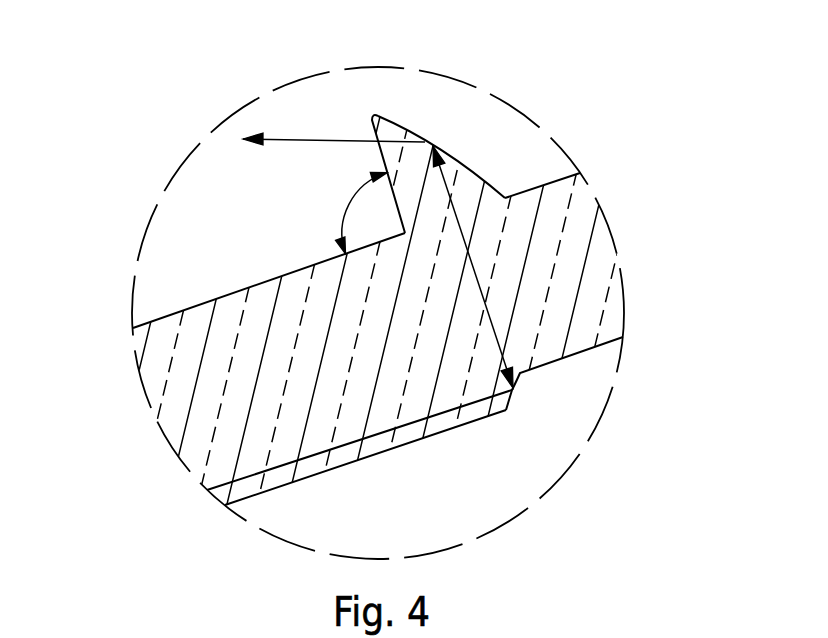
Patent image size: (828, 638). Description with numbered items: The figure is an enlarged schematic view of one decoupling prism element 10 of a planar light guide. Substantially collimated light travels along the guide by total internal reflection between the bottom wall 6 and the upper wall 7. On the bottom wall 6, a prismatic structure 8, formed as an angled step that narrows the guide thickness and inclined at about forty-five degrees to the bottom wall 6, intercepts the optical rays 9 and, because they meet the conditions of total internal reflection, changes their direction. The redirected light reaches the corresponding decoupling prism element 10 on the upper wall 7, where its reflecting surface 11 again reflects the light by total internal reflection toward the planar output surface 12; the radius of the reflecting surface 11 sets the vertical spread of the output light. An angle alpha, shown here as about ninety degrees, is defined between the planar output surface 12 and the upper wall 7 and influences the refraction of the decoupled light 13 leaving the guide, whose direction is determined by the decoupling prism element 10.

The bottom wall 6 is at (279, 487).
The upper wall 7 is at (200, 305).
The prismatic structure 8 is at (521, 374).
The optical rays 9 is at (510, 392).
The decoupling prism element 10 is at (420, 142).
The reflecting surface 11 is at (458, 160).
The planar output surface 12 is at (368, 128).
The decoupled light 13 is at (296, 131).